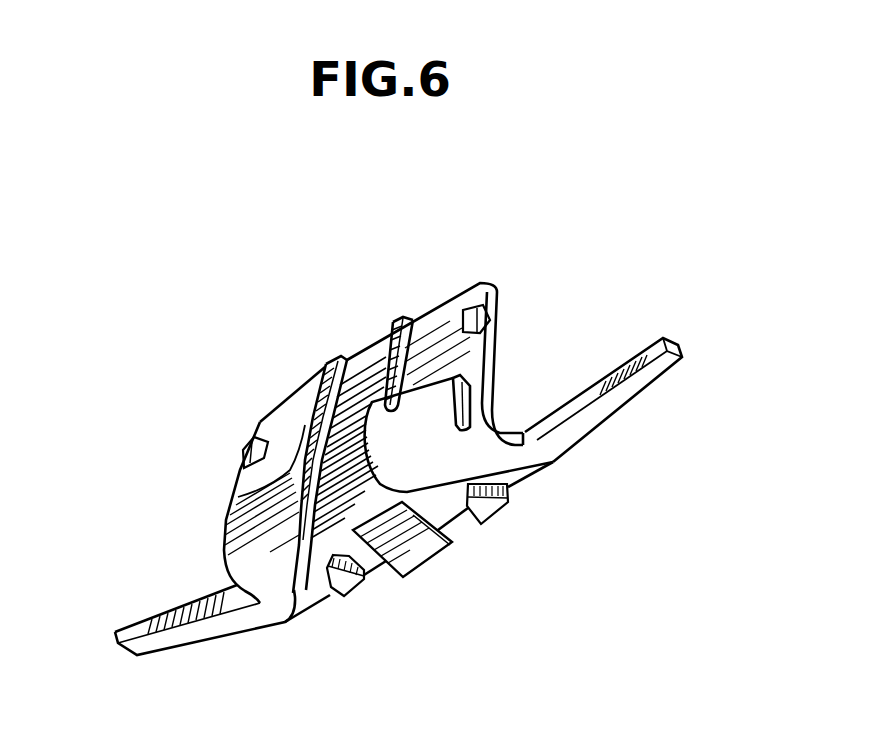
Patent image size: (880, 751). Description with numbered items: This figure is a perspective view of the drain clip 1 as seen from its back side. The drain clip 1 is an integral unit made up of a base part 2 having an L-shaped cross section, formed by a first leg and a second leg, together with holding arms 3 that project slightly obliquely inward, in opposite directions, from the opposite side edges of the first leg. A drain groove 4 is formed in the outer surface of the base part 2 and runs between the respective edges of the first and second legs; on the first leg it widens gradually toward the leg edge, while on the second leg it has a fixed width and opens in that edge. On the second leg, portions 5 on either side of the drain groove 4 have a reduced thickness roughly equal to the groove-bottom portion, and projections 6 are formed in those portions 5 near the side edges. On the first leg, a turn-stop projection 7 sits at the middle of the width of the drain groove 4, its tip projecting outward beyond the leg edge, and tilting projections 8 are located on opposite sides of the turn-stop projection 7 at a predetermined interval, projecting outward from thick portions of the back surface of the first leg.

The drain clip 1 is at (638, 240).
The base part 2 is at (500, 286).
The holding arms 3 is at (662, 370).
The drain groove 4 is at (368, 363).
The portions 5 is at (443, 320).
The projections 6 is at (247, 446).
The turn-stop projection 7 is at (415, 556).
The tilting projections 8 is at (493, 507).